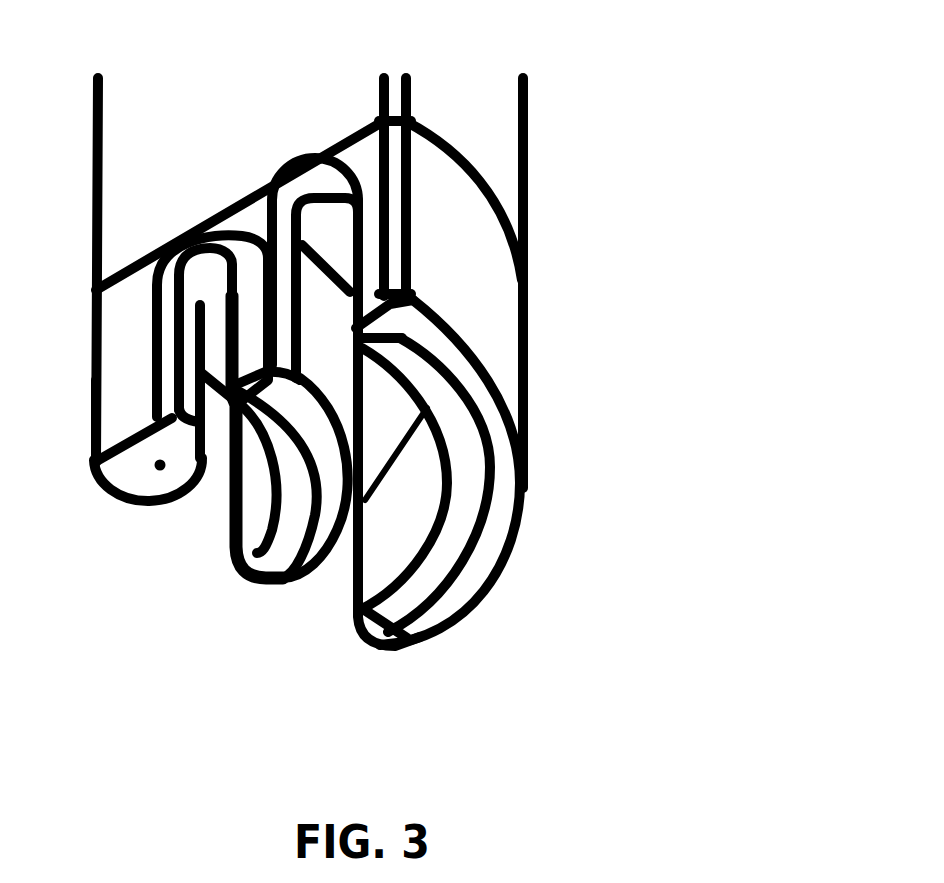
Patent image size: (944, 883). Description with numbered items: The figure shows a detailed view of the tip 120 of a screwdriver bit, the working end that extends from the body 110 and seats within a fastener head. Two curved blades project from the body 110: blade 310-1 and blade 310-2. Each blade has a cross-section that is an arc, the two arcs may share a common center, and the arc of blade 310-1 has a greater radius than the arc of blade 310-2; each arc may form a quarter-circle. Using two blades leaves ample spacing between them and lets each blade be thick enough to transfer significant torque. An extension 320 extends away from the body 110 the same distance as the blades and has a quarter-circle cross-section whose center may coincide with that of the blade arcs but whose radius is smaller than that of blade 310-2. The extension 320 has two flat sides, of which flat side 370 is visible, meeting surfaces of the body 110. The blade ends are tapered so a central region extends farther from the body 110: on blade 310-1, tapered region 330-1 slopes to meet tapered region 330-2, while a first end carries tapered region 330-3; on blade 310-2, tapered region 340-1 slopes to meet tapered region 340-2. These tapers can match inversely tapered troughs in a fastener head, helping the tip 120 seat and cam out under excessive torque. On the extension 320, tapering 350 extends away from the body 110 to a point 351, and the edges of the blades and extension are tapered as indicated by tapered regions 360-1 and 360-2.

The body 110 is at (552, 90).
The tip 120 is at (600, 250).
The blade 310-1 is at (532, 348).
The blade 310-2 is at (228, 512).
The extension 320 is at (85, 437).
The tapered region 330-1 is at (503, 497).
The tapered region 330-2 is at (450, 547).
The tapered region 330-3 is at (412, 312).
The tapered region 340-1 is at (313, 573).
The tapered region 340-2 is at (260, 568).
The tapering 350 is at (103, 482).
The point 351 is at (158, 470).
The tapered region 360-1 is at (298, 207).
The tapered region 360-2 is at (205, 245).
The flat side 370 is at (138, 300).